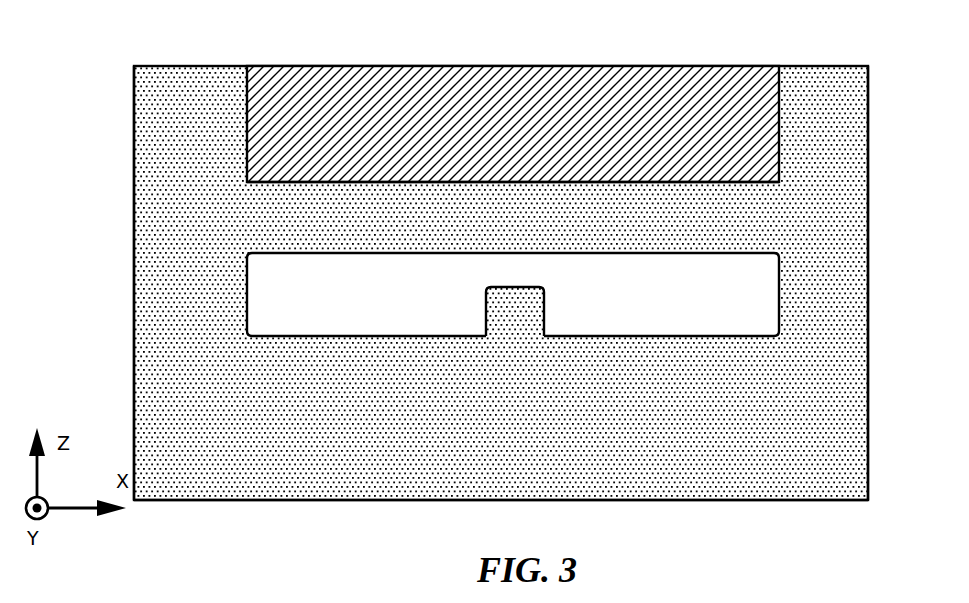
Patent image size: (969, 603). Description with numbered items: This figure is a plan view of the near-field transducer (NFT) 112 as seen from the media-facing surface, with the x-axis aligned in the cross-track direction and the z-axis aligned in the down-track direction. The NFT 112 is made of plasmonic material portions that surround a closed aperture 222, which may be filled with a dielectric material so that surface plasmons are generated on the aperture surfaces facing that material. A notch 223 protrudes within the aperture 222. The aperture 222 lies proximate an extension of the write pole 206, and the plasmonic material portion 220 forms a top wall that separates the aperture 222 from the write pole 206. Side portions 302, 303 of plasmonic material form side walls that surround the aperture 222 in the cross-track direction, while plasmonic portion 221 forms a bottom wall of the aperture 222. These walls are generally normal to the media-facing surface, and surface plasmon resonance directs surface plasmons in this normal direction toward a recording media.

The near-field transducer (NFT) 112 is at (643, 428).
The write pole 206 is at (316, 76).
The plasmonic material portion (top wall) 220 is at (535, 225).
The plasmonic material portion (bottom wall) 221 is at (525, 445).
The aperture 222 is at (407, 308).
The notch 223 is at (533, 326).
The side portion of plasmonic material 302 is at (203, 308).
The side portion of plasmonic material 303 is at (837, 283).